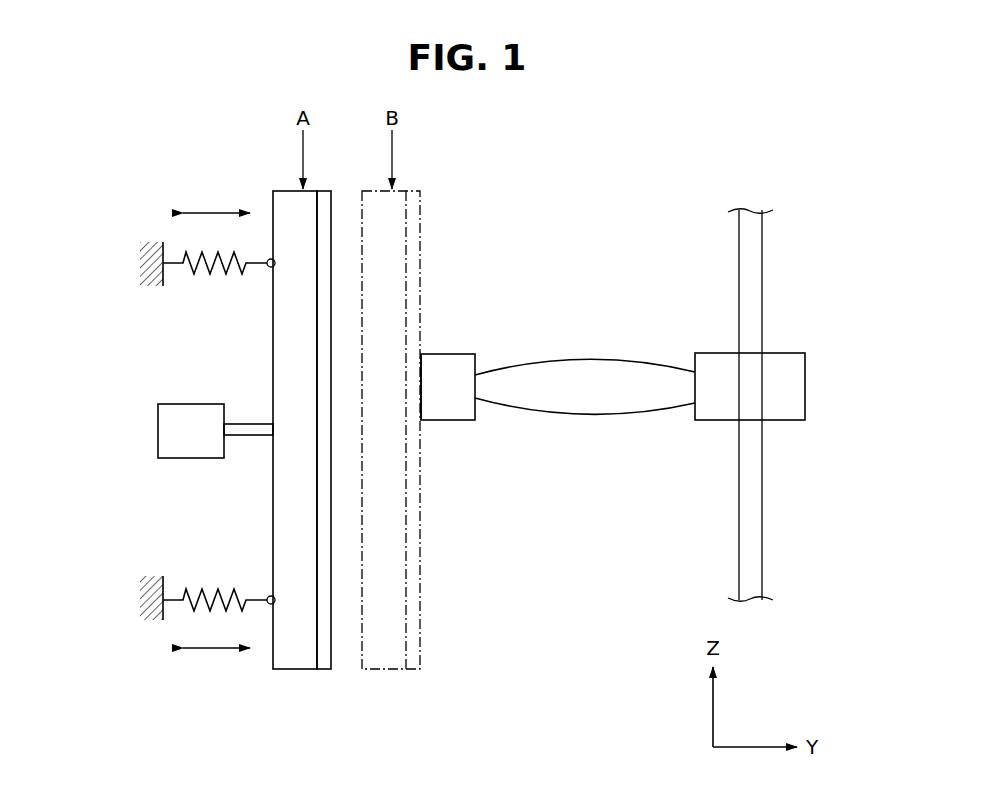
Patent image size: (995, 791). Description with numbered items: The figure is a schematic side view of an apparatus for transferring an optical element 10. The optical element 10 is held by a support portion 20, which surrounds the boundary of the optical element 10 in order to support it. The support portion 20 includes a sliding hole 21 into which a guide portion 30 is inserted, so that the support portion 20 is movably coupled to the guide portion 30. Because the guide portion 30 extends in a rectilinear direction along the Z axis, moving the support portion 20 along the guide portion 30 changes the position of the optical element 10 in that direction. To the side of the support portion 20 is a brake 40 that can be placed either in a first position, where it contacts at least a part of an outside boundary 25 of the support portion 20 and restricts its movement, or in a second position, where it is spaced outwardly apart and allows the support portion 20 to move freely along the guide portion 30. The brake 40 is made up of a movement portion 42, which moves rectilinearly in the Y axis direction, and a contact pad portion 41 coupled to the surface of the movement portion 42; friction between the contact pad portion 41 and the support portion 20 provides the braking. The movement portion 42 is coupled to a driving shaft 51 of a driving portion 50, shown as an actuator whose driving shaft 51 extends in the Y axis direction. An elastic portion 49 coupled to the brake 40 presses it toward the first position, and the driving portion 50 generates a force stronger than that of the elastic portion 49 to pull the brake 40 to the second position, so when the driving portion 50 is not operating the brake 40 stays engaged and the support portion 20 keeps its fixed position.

The optical element 10 is at (575, 362).
The support portion 20 is at (458, 432).
The sliding hole 21 is at (760, 422).
The outside boundary 25 is at (421, 372).
The guide portion 30 is at (755, 268).
The brake 40 is at (292, 478).
The contact pad portion 41 is at (322, 459).
The movement portion 42 is at (290, 670).
The elastic portion 49 is at (215, 274).
The driving portion 50 is at (146, 398).
The driving shaft 51 is at (247, 428).